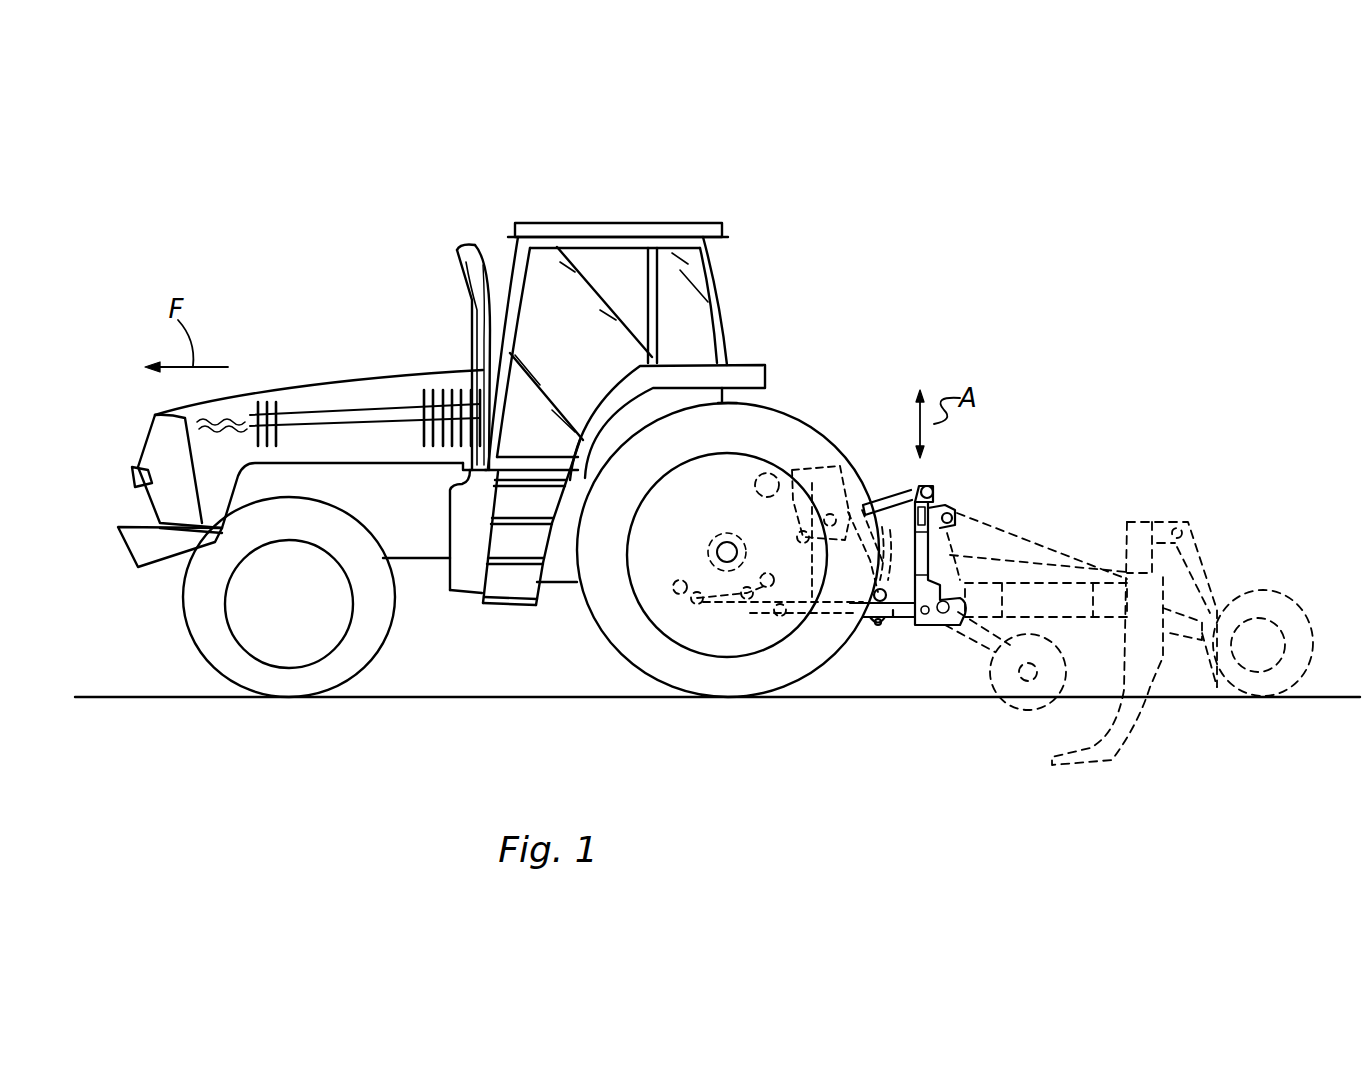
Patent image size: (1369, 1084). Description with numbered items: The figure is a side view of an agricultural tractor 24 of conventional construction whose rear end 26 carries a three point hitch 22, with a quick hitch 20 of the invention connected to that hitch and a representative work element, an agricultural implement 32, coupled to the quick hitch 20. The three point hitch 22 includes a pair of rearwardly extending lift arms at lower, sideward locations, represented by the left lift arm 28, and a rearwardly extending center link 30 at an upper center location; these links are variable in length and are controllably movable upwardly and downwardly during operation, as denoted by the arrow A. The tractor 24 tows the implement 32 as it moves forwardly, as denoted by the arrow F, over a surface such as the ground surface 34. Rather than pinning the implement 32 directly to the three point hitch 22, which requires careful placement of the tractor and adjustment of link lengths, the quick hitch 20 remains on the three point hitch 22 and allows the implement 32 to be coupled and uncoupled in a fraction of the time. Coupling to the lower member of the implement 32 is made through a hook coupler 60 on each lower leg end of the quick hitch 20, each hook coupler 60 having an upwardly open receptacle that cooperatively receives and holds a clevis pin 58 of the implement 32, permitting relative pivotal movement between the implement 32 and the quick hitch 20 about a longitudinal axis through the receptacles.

The quick hitch 20 is at (938, 489).
The three point hitch 22 is at (926, 572).
The agricultural tractor 24 is at (603, 222).
The rear end 26 is at (707, 604).
The left lift arm 28 is at (880, 626).
The center link 30 is at (893, 490).
The implement 32 is at (1188, 522).
The ground surface 34 is at (1341, 694).
The clevis pin 58 is at (917, 627).
The hook coupler 60 is at (945, 625).